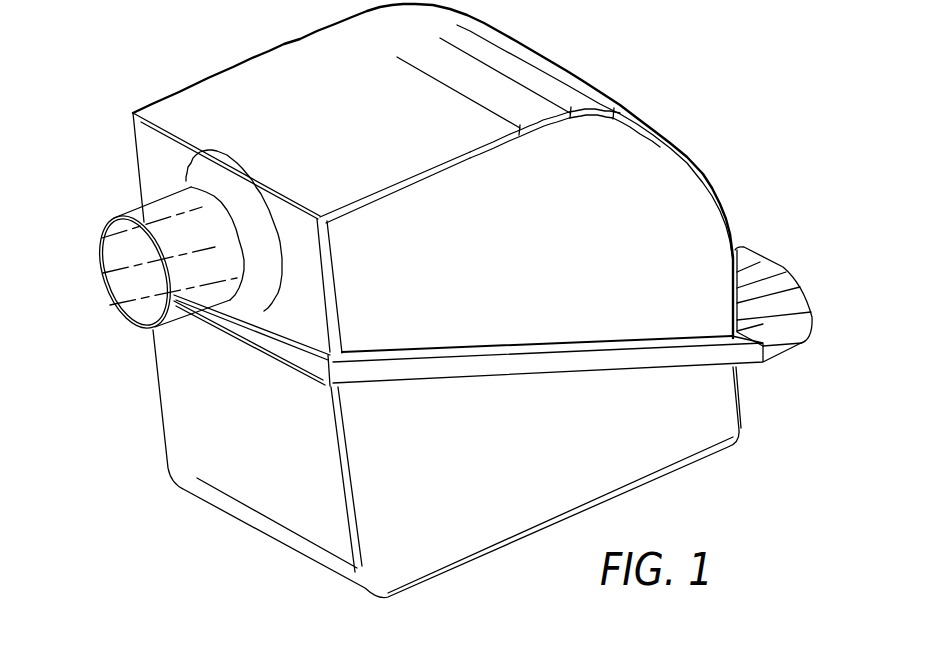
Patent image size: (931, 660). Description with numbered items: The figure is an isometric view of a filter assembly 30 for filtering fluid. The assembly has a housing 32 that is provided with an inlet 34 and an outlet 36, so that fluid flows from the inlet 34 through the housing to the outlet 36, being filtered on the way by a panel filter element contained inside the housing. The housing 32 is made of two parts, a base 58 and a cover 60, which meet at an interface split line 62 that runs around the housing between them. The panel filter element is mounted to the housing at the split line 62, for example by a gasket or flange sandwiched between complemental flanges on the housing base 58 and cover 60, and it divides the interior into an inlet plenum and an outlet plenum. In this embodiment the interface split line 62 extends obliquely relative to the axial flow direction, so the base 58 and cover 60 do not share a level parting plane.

The filter assembly 30 is at (454, 301).
The housing 32 is at (731, 217).
The inlet 34 is at (773, 266).
The outlet 36 is at (102, 298).
The base 58 is at (707, 442).
The cover 60 is at (683, 174).
The interface split line 62 is at (487, 367).